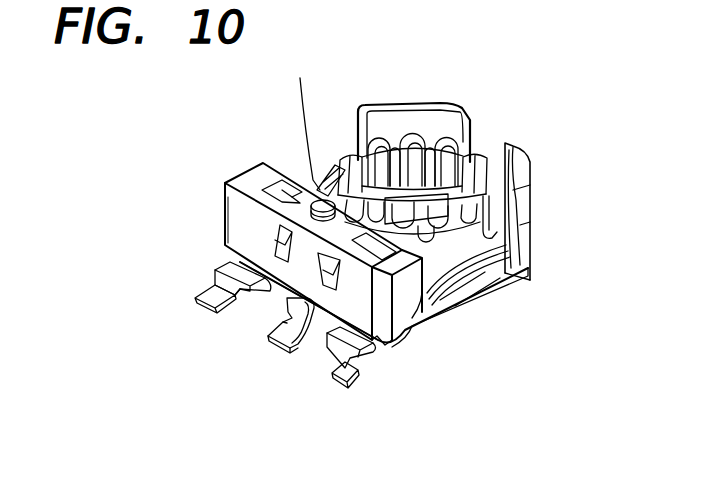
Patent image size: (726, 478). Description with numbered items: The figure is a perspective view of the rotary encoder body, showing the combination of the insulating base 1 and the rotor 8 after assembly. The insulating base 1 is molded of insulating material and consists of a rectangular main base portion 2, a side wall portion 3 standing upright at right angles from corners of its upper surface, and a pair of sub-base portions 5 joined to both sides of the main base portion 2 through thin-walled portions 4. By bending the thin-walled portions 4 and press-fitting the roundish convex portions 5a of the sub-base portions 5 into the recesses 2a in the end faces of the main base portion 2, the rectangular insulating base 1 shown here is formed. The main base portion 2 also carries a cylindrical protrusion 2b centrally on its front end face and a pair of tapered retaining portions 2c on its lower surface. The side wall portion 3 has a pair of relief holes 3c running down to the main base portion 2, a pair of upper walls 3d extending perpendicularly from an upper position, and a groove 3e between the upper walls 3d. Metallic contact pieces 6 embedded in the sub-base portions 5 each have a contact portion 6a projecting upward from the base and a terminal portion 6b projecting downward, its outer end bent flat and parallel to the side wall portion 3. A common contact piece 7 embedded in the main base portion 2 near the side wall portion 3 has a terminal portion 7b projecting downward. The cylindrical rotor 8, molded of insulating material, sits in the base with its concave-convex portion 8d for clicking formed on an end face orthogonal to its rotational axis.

The insulating base 1 is at (398, 92).
The main base portion 2 is at (263, 227).
The recess 2a is at (284, 198).
The cylindrical protrusion 2b is at (323, 198).
The retaining portion 2c is at (333, 295).
The side wall portion 3 is at (517, 285).
The relief hole 3c is at (457, 287).
The upper wall 3d is at (415, 104).
The groove 3e is at (498, 147).
The thin-walled portion 4 is at (392, 345).
The sub-base portion 5 is at (230, 194).
The convex portion 5a is at (245, 212).
The contact piece 6 is at (195, 307).
The contact portion 6a is at (513, 308).
The terminal portion 6b is at (225, 295).
The common contact piece 7 is at (284, 362).
The terminal portion 7b is at (277, 337).
The rotor 8 is at (456, 116).
The concave-convex portion 8d is at (507, 148).